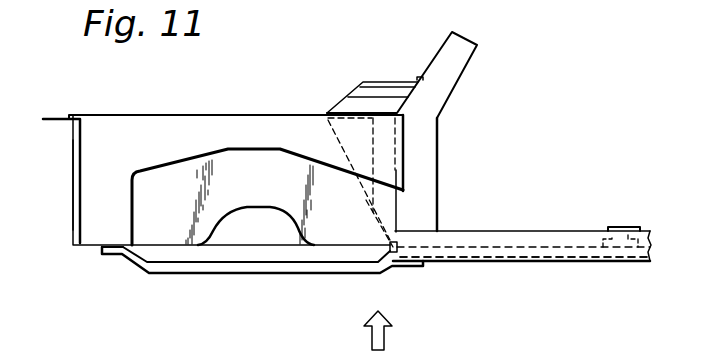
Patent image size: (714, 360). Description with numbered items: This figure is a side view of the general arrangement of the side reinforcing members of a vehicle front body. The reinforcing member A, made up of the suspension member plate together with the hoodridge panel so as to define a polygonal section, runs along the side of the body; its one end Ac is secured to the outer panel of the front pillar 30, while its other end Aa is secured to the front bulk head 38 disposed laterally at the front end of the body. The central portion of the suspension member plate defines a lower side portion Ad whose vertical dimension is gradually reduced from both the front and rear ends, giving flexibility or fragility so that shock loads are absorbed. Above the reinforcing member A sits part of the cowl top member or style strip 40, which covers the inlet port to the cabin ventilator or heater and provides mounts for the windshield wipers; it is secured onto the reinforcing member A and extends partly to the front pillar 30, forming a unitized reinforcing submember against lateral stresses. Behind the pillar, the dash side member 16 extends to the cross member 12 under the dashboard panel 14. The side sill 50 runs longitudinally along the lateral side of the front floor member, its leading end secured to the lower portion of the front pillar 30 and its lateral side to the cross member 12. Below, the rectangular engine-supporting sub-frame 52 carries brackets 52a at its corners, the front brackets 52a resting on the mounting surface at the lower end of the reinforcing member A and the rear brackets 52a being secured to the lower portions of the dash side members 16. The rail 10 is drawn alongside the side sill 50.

The reinforcing member A is at (230, 114).
The other end of the reinforcing member Aa is at (95, 188).
The lower side portion Ad is at (182, 166).
The one end of the reinforcing member Ac is at (398, 153).
The rail 10 is at (567, 242).
The cross member 12 is at (630, 225).
The dashboard panel 14 is at (367, 207).
The dash side member 16 is at (390, 252).
The front pillar 30 is at (438, 182).
The front bulk head 38 is at (77, 153).
The cowl top member 40 is at (365, 79).
The side sill 50 is at (530, 258).
The sub-frame 52 is at (242, 273).
The bracket 52a is at (113, 251).